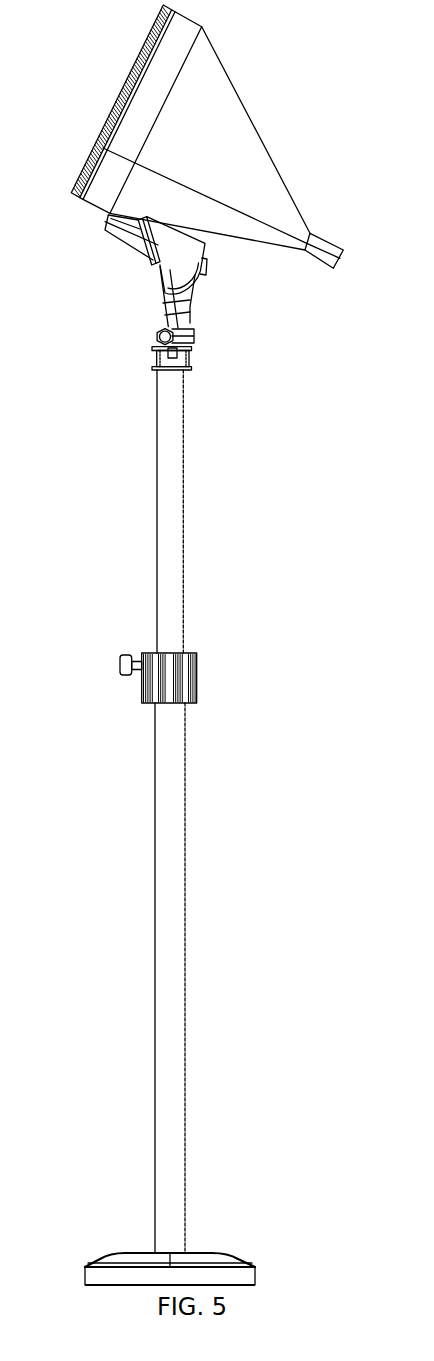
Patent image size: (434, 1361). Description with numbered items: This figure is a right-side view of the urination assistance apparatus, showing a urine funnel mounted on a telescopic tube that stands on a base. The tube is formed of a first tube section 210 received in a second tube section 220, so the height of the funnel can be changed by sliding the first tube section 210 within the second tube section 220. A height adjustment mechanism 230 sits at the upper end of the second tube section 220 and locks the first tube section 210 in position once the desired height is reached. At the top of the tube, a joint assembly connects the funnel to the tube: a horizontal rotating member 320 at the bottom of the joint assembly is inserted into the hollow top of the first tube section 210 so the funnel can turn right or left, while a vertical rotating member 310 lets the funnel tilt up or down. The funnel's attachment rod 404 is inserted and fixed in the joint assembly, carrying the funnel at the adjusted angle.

The attachment rod 404 is at (122, 238).
The vertical rotating member 310 is at (156, 328).
The horizontal rotating member 320 is at (190, 355).
The first tube section 210 is at (172, 517).
The height adjustment mechanism 230 is at (197, 685).
The second tube section 220 is at (175, 912).